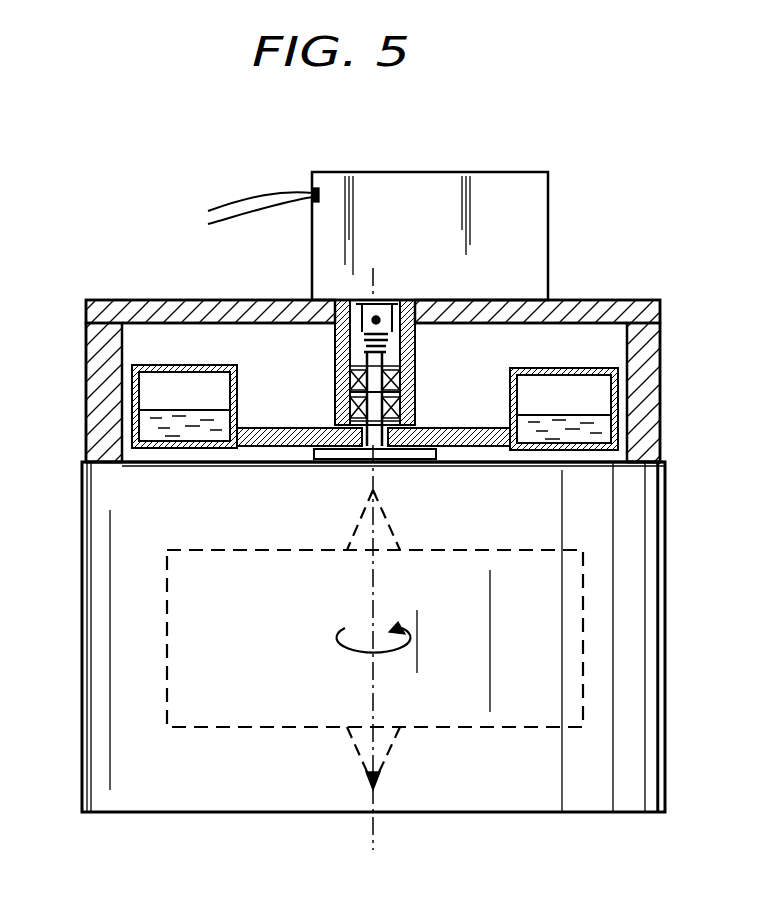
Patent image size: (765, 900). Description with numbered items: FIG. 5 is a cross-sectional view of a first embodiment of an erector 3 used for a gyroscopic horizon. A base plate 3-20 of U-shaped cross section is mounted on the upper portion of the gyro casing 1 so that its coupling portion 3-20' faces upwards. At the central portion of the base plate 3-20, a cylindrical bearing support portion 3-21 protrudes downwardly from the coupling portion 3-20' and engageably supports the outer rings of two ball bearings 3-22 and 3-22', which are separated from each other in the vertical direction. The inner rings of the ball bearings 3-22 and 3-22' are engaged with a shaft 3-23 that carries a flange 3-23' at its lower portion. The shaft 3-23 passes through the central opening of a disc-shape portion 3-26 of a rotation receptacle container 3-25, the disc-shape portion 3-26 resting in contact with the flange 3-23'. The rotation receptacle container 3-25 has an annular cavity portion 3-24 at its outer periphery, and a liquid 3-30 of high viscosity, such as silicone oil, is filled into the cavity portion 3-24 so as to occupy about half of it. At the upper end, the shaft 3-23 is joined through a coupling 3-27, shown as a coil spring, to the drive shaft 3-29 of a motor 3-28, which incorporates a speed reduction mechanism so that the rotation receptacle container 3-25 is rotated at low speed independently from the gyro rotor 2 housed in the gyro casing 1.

The gyro casing 1 is at (463, 809).
The gyro rotor 2 is at (459, 729).
The erector 3 is at (607, 299).
The base plate 3-20 is at (414, 372).
The coupling portion 3-20' is at (373, 285).
The bearing support portion 3-21 is at (405, 390).
The ball bearing 3-22 is at (330, 362).
The ball bearing 3-22' is at (324, 393).
The shaft 3-23 is at (373, 467).
The flange 3-23' is at (393, 478).
The annular cavity portion 3-24 is at (148, 395).
The rotation receptacle container 3-25 is at (245, 448).
The disc-shape portion 3-26 is at (420, 428).
The coupling 3-27 is at (382, 339).
The motor 3-28 is at (544, 226).
The drive shaft 3-29 is at (382, 298).
The liquid 3-30 is at (580, 440).